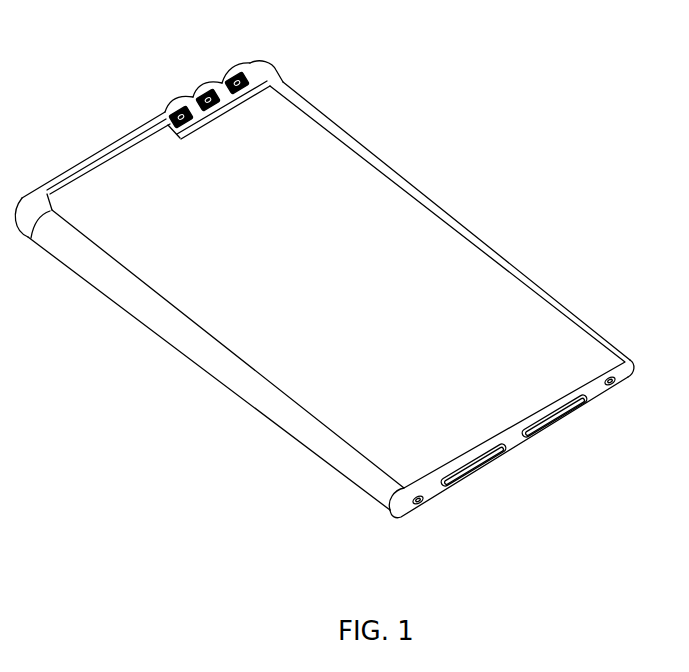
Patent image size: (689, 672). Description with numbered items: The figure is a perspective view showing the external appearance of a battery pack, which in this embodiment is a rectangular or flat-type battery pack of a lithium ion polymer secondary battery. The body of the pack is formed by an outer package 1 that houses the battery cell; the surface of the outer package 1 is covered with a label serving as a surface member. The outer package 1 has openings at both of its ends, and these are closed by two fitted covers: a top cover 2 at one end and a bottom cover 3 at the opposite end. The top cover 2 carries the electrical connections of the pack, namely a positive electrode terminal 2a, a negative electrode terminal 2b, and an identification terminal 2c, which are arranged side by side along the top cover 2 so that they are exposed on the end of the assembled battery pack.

The outer package 1 is at (417, 230).
The top cover 2 is at (103, 148).
The positive electrode terminal 2a is at (230, 77).
The negative electrode terminal 2b is at (197, 90).
The identification terminal 2c is at (173, 110).
The bottom cover 3 is at (518, 443).